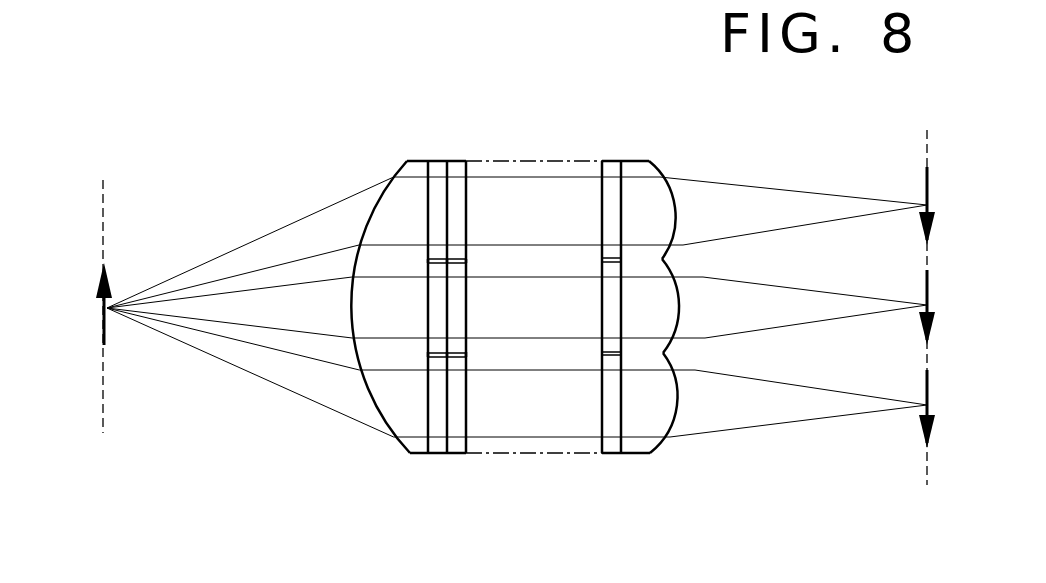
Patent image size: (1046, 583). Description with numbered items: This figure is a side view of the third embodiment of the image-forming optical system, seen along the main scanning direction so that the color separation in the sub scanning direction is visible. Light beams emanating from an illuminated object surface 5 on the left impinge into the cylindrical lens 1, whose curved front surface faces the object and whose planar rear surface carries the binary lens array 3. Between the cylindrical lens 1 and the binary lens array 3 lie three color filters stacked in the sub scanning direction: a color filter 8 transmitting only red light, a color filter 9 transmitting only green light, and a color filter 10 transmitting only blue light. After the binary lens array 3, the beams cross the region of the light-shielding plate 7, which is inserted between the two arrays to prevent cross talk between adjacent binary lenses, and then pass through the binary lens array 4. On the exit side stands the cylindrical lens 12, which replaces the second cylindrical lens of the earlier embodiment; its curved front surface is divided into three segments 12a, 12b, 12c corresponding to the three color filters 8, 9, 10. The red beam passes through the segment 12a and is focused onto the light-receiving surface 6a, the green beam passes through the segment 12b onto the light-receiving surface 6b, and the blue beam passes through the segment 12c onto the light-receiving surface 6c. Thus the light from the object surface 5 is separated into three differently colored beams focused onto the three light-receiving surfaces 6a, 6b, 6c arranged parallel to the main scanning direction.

The cylindrical lens 1 is at (412, 173).
The binary lens array 3 is at (370, 289).
The binary lens array 4 is at (611, 152).
The object surface 5 is at (103, 228).
The light-receiving surface 6a is at (924, 160).
The light-receiving surface 6b is at (924, 262).
The light-receiving surface 6c is at (924, 362).
The light-shielding plate 7 is at (527, 160).
The color filter 8 is at (436, 206).
The color filter 9 is at (437, 316).
The color filter 10 is at (442, 408).
The cylindrical lens 12 is at (717, 290).
The segment 12a is at (653, 198).
The segment 12b is at (663, 315).
The segment 12c is at (648, 406).